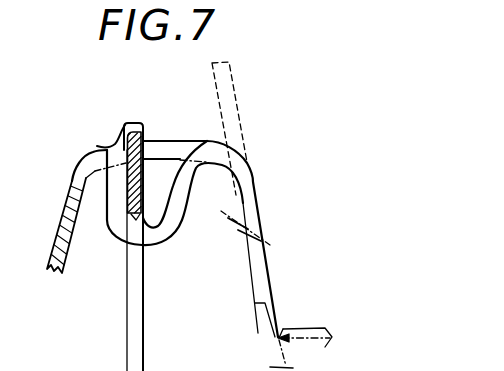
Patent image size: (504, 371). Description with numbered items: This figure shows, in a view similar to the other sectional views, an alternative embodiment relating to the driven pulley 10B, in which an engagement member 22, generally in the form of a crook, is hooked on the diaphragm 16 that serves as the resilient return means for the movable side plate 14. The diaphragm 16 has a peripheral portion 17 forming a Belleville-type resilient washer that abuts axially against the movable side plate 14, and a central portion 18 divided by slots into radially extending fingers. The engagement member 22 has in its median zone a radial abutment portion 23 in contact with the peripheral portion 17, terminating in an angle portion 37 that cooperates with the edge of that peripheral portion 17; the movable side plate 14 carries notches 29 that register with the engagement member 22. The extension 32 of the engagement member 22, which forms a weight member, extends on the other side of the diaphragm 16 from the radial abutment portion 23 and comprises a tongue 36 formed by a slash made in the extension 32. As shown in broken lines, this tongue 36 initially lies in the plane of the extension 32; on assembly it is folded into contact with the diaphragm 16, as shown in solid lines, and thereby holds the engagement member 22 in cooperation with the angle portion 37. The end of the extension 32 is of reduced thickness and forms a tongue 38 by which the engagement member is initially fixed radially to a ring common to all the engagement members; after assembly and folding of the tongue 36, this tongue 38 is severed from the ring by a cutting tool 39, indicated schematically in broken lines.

The driven pulley 10B is at (257, 166).
The movable side plate 14 is at (62, 202).
The diaphragm 16 is at (126, 345).
The peripheral portion 17 is at (110, 147).
The central portion 18 is at (144, 308).
The engagement member 22 is at (197, 208).
The radial abutment portion 23 is at (110, 222).
The notches 29 is at (82, 163).
The extension 32 is at (256, 203).
The tongue 36 is at (168, 150).
The angle portion 37 is at (128, 125).
The tongue 38 is at (280, 333).
The cutting tool 39 is at (307, 328).